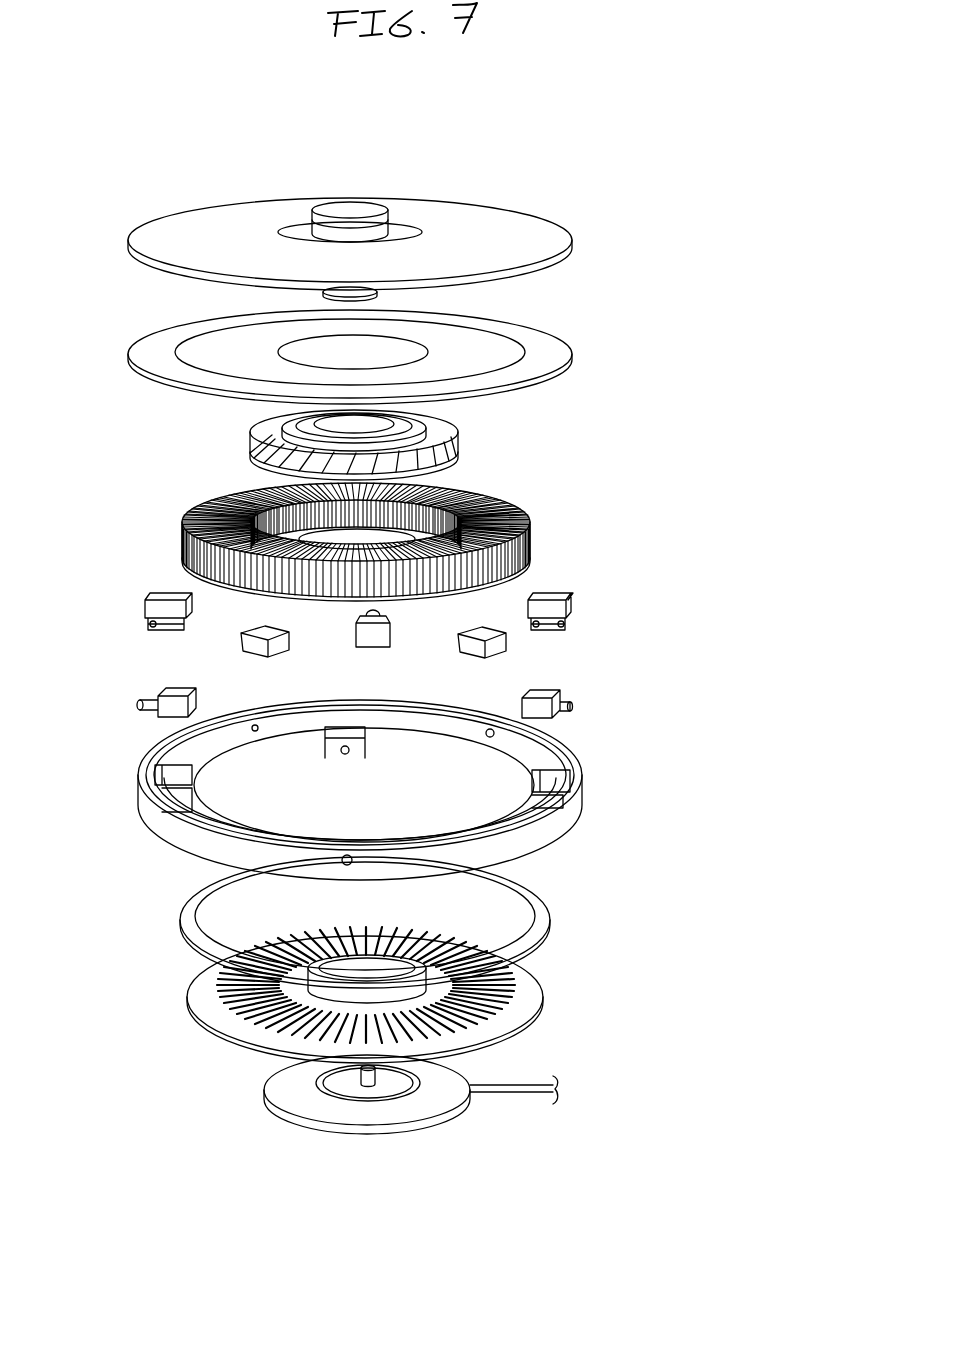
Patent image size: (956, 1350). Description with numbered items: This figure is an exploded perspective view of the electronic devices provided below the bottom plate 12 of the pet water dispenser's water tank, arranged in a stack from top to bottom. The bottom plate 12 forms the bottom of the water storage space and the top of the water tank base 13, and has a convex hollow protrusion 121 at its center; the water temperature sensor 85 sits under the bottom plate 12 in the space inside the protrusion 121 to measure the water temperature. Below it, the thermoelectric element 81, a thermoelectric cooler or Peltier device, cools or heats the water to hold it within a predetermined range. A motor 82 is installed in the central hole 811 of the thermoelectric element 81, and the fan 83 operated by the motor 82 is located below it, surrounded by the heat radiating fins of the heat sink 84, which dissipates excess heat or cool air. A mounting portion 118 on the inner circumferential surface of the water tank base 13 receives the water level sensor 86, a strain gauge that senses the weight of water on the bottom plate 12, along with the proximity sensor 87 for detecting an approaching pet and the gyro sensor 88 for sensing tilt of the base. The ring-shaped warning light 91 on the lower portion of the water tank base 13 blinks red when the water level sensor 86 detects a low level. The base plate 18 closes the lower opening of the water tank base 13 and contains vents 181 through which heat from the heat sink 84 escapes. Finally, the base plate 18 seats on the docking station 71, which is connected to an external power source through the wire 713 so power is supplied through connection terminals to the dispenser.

The bottom plate 12 is at (464, 198).
The protrusion 121 is at (350, 205).
The water temperature sensor 85 is at (380, 291).
The thermoelectric element 81 is at (537, 343).
The hole 811 is at (318, 341).
The motor 82 is at (465, 420).
The fan 83 is at (463, 450).
The heat sink 84 is at (533, 551).
The water level sensor 86 is at (160, 690).
The proximity sensor 87 is at (272, 643).
The gyro sensor 88 is at (183, 625).
The water tank base 13 is at (590, 776).
The mounting portion 118 is at (175, 778).
The warning light 91 is at (548, 898).
The base plate 18 is at (546, 973).
The vents 181 is at (513, 1003).
The wire 713 is at (522, 1084).
The docking station 71 is at (463, 1120).